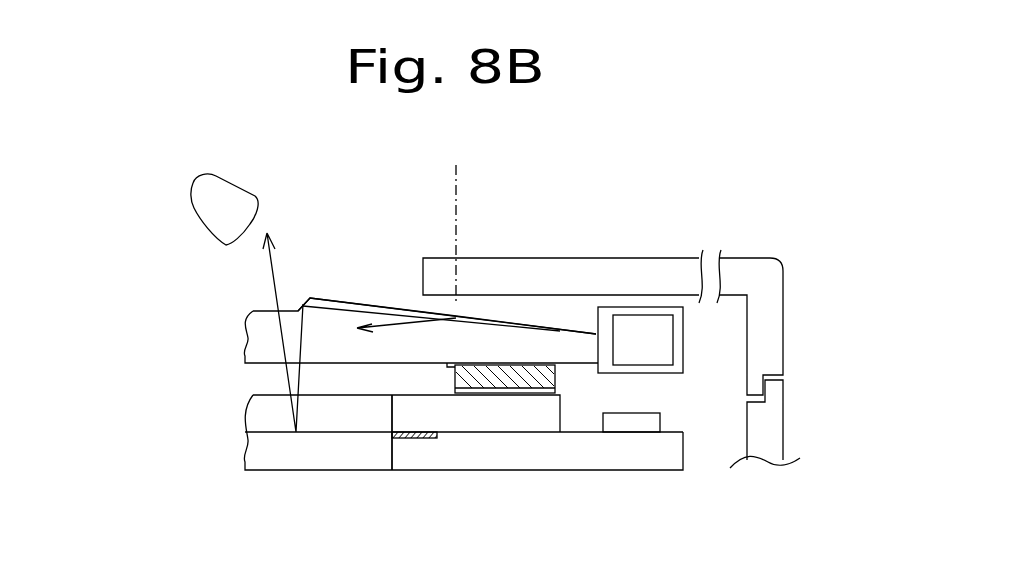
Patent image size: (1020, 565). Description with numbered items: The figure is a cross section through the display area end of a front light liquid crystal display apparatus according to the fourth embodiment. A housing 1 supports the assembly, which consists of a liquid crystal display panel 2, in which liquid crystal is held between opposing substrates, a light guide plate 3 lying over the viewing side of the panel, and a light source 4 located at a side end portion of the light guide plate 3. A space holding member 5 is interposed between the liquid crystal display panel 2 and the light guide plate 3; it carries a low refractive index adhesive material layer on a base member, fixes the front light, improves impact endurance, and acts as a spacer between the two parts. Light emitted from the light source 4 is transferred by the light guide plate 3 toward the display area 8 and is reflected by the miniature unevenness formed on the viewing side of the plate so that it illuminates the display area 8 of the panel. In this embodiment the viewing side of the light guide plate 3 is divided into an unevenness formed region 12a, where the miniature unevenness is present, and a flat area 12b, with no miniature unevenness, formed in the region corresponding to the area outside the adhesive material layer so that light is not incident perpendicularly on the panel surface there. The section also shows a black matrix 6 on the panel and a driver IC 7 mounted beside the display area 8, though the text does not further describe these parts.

The housing 1 is at (648, 278).
The liquid crystal display panel 2 is at (240, 470).
The light guide plate 3 is at (542, 323).
The light source 4 is at (642, 335).
The space holding member 5 is at (566, 365).
The black matrix 6 is at (462, 428).
The driver IC 7 is at (630, 423).
The display area 8 is at (392, 478).
The uneveness formed region 12a is at (349, 239).
The flat area 12b is at (556, 249).